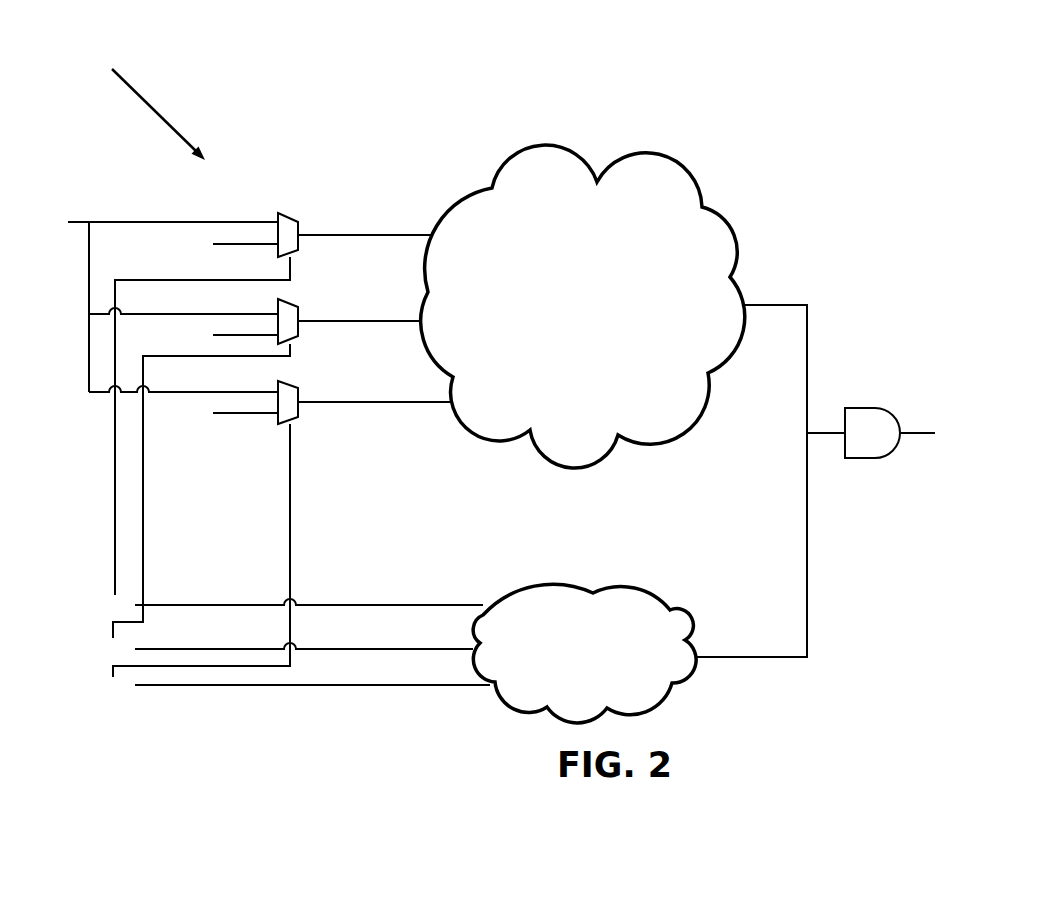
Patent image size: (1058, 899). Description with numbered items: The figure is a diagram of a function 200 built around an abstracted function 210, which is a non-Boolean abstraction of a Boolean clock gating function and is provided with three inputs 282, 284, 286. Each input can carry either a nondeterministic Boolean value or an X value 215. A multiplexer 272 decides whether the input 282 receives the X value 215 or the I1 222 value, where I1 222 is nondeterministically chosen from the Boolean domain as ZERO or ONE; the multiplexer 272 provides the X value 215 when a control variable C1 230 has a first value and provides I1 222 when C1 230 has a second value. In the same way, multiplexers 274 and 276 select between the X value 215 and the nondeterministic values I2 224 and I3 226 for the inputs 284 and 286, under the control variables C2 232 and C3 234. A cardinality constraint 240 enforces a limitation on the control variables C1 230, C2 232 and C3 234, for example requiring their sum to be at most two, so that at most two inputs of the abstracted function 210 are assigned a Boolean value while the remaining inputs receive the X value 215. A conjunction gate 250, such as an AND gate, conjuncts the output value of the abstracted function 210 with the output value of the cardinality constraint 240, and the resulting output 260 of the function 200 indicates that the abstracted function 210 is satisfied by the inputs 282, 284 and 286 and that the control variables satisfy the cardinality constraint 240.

The function 200 is at (147, 103).
The abstracted function 210 is at (571, 149).
The X value 215 is at (66, 206).
The I1 222 is at (188, 243).
The I2 224 is at (190, 334).
The I3 226 is at (203, 426).
The control variable C1 230 is at (98, 603).
The control variable C2 232 is at (98, 646).
The control variable C3 234 is at (98, 683).
The cardinality constraint 240 is at (665, 600).
The conjunction gate 250 is at (854, 407).
The output 260 is at (905, 432).
The multiplexer 272 is at (288, 212).
The multiplexer 274 is at (288, 300).
The multiplexer 276 is at (288, 381).
The input 282 is at (400, 233).
The input 284 is at (387, 319).
The input 286 is at (392, 401).